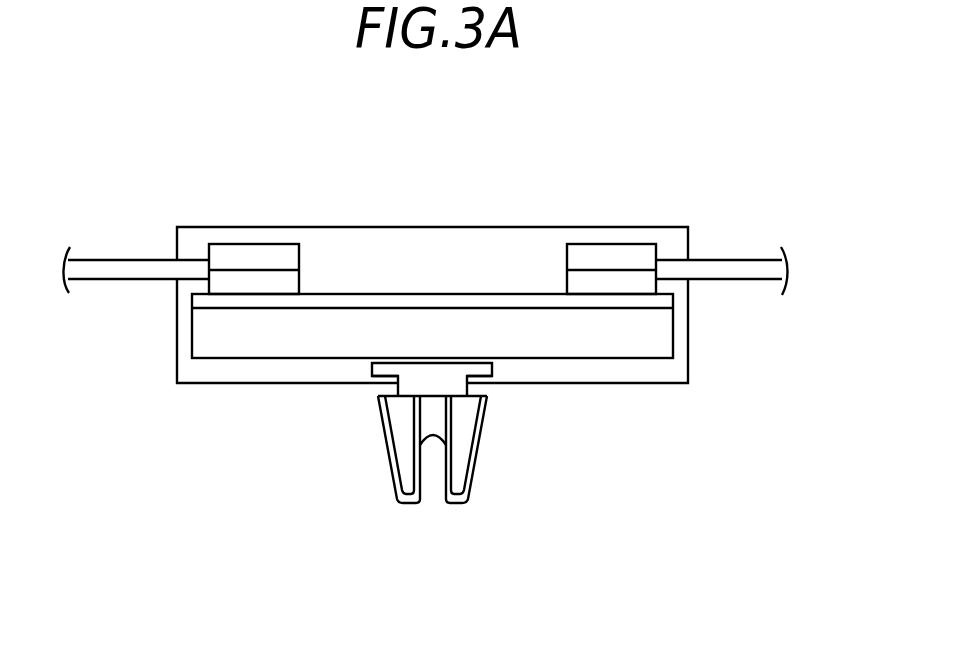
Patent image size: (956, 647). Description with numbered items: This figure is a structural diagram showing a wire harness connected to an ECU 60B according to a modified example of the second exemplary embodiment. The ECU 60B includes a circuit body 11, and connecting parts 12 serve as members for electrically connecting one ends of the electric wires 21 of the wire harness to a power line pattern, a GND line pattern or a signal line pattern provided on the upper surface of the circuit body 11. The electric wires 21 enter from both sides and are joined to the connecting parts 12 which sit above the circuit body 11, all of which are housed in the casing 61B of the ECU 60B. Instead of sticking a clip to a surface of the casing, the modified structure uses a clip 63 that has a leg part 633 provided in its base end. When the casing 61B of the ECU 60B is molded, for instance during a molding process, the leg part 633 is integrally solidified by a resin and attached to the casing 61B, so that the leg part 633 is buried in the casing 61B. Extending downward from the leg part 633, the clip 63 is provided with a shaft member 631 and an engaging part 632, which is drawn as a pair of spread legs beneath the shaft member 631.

The ECU 60B is at (356, 168).
The casing 61B is at (515, 238).
The connecting part 12 is at (245, 244).
The circuit body 11 is at (238, 343).
The electric wire 21 is at (110, 260).
The clip 63 is at (505, 453).
The shaft member 631 is at (413, 388).
The engaging part 632 is at (408, 503).
The leg part 633 is at (483, 370).